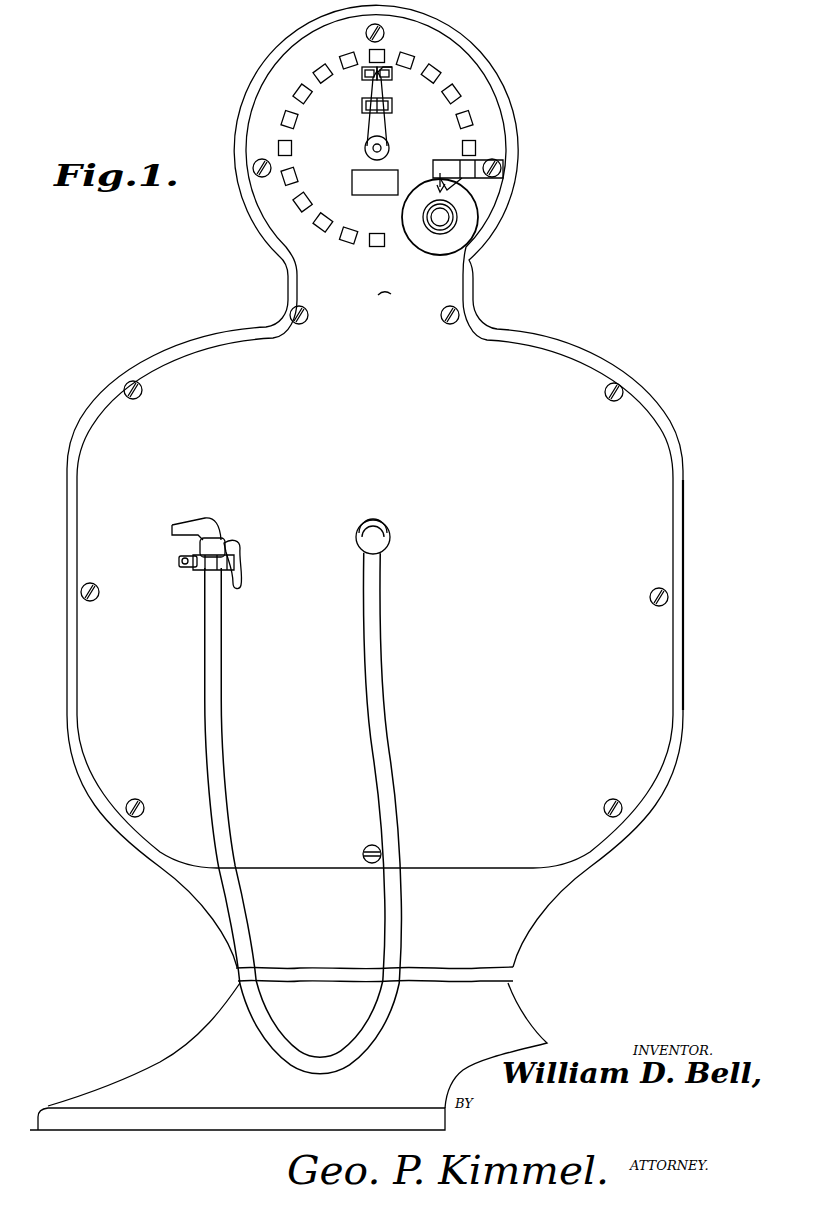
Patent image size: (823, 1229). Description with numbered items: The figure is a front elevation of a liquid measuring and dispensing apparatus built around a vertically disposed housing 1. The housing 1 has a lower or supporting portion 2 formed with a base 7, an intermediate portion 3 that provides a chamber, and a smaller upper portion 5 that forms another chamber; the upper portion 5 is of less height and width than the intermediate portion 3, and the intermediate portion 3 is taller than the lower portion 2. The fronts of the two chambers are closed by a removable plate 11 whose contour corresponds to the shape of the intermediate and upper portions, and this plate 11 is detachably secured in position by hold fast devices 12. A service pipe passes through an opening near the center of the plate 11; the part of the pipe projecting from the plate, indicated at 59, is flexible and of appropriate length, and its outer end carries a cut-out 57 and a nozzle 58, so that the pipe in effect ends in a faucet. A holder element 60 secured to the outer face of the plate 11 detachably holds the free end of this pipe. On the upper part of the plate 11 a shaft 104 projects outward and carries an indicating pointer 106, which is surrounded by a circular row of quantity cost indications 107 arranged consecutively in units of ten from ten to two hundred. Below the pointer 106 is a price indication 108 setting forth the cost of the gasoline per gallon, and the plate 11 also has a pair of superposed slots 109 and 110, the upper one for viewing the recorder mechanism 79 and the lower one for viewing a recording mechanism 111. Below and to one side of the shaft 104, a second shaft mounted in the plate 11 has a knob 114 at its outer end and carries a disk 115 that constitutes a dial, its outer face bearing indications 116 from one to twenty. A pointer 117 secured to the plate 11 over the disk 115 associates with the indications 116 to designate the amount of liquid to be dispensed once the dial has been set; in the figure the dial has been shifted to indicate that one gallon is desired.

The housing 1 is at (686, 616).
The lower or supporting portion 2 is at (525, 937).
The intermediate portion 3 is at (686, 508).
The upper portion 5 is at (243, 212).
The base 7 is at (160, 1126).
The removable plate 11 is at (498, 375).
The hold fast devices 12 is at (440, 315).
The cut-out 57 is at (223, 546).
The nozzle 58 is at (186, 528).
The flexible portion of service pipe 59 is at (382, 696).
The holder element 60 is at (195, 570).
The recorder mechanism 79 is at (386, 70).
The shaft 104 is at (389, 149).
The indicating pointer 106 is at (385, 134).
The quantity cost indications 107 is at (322, 160).
The price indication 108 is at (387, 190).
The slot 109 is at (365, 78).
The slot 110 is at (362, 107).
The recording mechanism 111 is at (390, 106).
The knob 114 is at (448, 217).
The disk 115 is at (462, 198).
The indications 116 is at (430, 253).
The pointer 117 is at (462, 168).